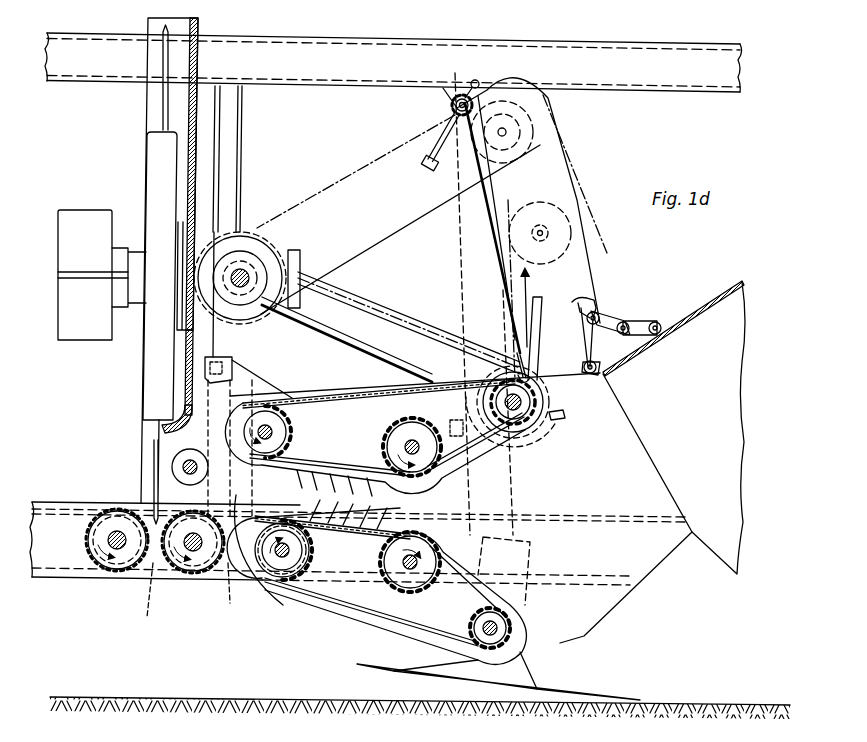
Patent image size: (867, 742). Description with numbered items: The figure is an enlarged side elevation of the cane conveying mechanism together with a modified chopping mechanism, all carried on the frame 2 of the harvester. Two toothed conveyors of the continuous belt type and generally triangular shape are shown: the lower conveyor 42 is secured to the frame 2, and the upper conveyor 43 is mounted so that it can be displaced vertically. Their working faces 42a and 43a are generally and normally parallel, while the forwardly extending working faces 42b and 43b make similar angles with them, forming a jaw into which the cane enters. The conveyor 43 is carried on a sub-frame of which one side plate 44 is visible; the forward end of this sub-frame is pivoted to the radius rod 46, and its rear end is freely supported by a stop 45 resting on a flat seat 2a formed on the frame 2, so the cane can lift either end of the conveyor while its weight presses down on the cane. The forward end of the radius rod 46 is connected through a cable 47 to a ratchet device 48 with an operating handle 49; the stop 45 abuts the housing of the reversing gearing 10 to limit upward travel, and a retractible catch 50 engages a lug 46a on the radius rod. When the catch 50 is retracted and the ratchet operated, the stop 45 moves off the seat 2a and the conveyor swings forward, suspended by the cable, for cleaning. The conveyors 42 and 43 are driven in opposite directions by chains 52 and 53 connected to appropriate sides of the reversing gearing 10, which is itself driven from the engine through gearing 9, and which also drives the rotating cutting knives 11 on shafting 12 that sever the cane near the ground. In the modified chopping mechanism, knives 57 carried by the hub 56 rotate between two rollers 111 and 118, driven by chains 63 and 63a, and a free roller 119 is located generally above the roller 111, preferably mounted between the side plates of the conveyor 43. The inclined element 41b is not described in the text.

The frame 2 is at (88, 62).
The flat abutment or seat 2a is at (190, 397).
The gearing 9 is at (92, 213).
The reversing gearing 10 is at (253, 230).
The rotating cutting knives 11 is at (570, 690).
The shafting 12 is at (545, 295).
The inclined shield wall 41b is at (703, 308).
The toothed conveyor 42 is at (333, 603).
The working face 42a is at (353, 527).
The working face 42b is at (467, 570).
The conveyor 43 is at (312, 395).
The working face 43a is at (331, 470).
The working face 43b is at (463, 467).
The side plate 44 is at (243, 377).
The stop 45 is at (190, 349).
The radius rod 46 is at (386, 304).
The lug 46a is at (560, 417).
The cable 47 is at (490, 190).
The ratchet device 48 is at (460, 96).
The operating handle 49 is at (443, 145).
The retractible catch 50 is at (590, 300).
The chain 52 is at (305, 332).
The chain 53 is at (408, 314).
The hub 56 is at (155, 202).
The knives 57 is at (163, 108).
The chain 63 is at (252, 559).
The chain 63a is at (148, 600).
The toothed roller 111 is at (192, 558).
The roller 118 is at (115, 557).
The free roller 119 is at (190, 449).